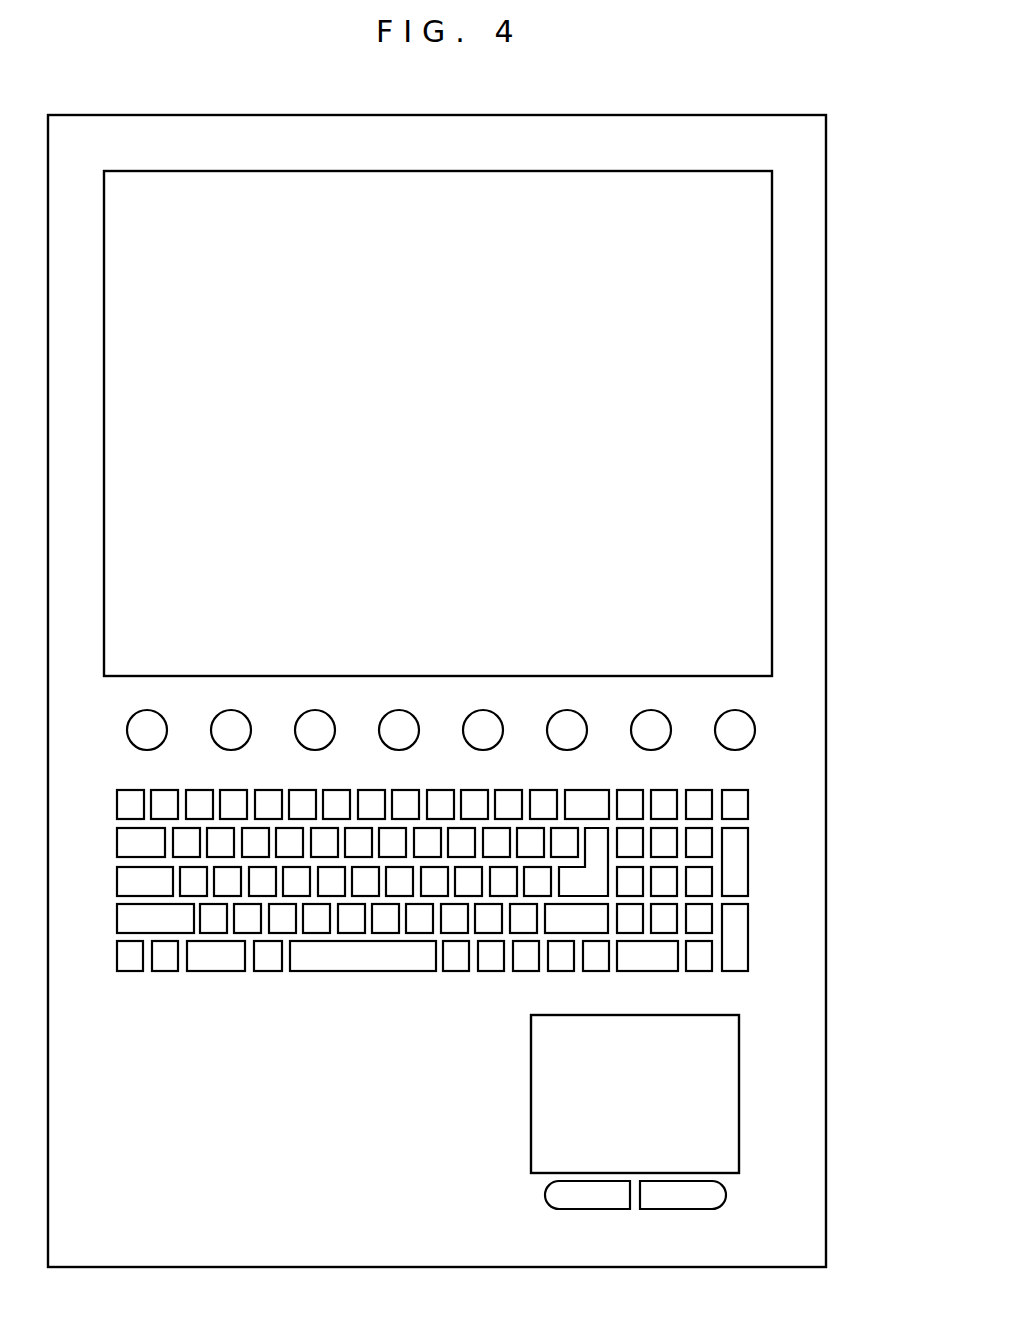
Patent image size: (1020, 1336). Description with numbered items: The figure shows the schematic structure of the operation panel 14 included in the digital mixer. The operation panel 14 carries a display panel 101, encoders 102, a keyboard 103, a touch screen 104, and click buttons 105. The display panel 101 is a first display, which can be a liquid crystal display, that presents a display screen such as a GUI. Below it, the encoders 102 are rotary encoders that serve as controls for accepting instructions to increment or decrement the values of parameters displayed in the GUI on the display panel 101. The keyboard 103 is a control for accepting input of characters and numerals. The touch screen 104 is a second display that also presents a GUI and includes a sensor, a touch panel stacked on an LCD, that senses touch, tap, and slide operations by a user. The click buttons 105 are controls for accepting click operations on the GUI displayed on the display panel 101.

The operation panel 14 is at (826, 183).
The display panel 101 is at (772, 240).
The encoders 102 is at (766, 719).
The keyboard 103 is at (269, 988).
The touch screen 104 is at (531, 1087).
The click buttons 105 is at (536, 1193).